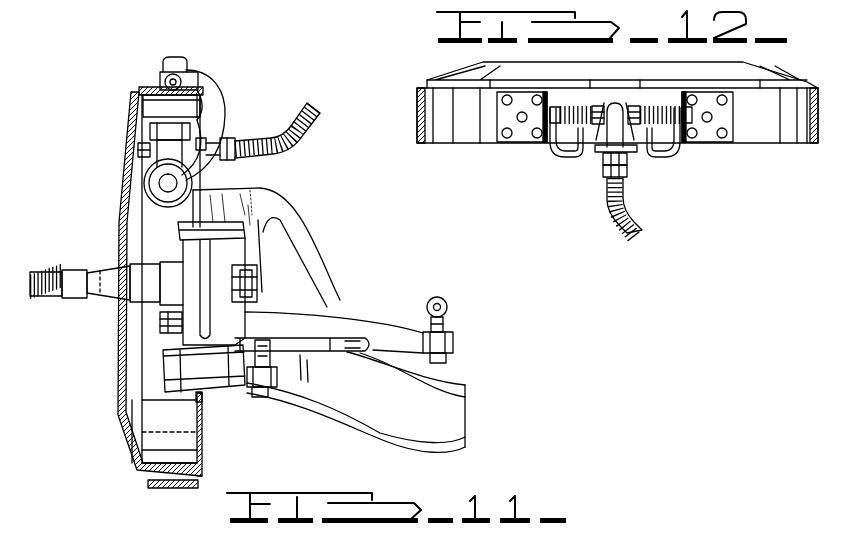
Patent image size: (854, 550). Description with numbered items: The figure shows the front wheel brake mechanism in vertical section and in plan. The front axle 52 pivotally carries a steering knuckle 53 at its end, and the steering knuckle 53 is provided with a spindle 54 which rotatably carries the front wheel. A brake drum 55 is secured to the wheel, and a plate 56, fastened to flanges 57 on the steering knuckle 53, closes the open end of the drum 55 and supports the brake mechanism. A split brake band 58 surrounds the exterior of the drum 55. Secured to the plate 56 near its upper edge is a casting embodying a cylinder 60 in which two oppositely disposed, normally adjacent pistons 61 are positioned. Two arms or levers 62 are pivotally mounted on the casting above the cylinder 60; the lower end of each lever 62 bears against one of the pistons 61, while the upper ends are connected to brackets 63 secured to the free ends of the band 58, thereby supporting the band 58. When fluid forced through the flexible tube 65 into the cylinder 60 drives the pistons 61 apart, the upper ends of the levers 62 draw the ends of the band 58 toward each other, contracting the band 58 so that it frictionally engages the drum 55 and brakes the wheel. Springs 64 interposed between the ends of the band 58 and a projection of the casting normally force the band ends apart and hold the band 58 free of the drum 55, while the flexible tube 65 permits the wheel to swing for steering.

In FIG. 11, the front axle 52 is at (427, 444).
In FIG. 11, the steering knuckle 53 is at (190, 242).
In FIG. 11, the spindle 54 is at (70, 272).
In FIG. 11, the brake drum 55 is at (121, 147).
In FIG. 12, the brake drum 55 is at (455, 78).
In FIG. 11, the plate 56 is at (203, 437).
In FIG. 11, the flanges 57 is at (207, 258).
In FIG. 11, the brake band 58 is at (174, 488).
In FIG. 12, the brake band 58 is at (417, 122).
In FIG. 11, the cylinder 60 is at (147, 191).
In FIG. 11, the pistons 61 is at (158, 178).
In FIG. 11, the arms or levers 62 is at (222, 94).
In FIG. 12, the arms or levers 62 is at (572, 156).
In FIG. 12, the brackets 63 is at (505, 117).
In FIG. 12, the springs 64 is at (586, 110).
In FIG. 11, the flexible tube 65 is at (288, 116).
In FIG. 12, the flexible tube 65 is at (645, 223).